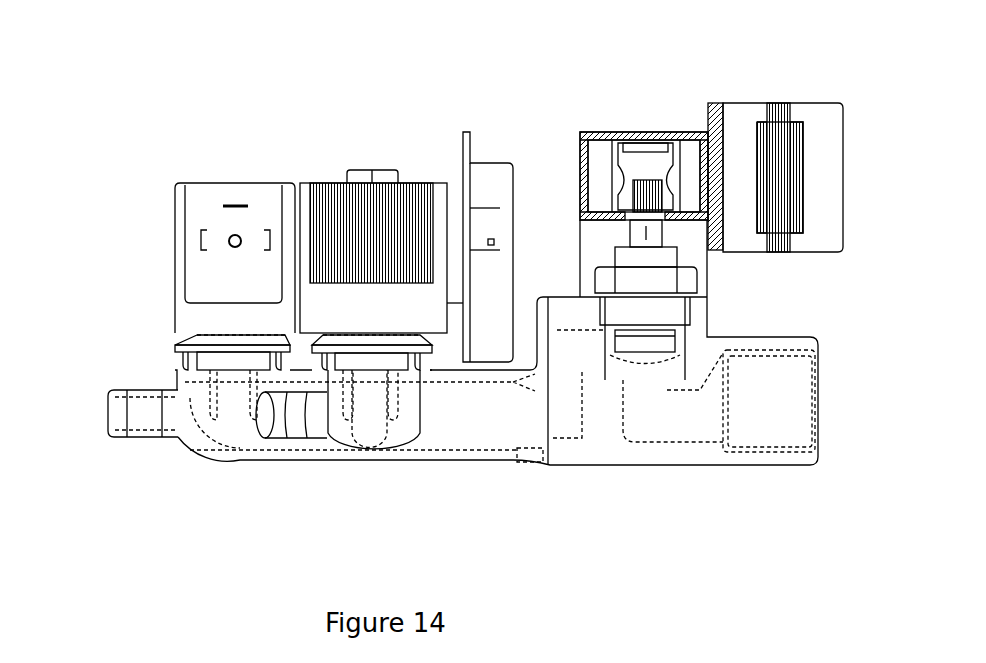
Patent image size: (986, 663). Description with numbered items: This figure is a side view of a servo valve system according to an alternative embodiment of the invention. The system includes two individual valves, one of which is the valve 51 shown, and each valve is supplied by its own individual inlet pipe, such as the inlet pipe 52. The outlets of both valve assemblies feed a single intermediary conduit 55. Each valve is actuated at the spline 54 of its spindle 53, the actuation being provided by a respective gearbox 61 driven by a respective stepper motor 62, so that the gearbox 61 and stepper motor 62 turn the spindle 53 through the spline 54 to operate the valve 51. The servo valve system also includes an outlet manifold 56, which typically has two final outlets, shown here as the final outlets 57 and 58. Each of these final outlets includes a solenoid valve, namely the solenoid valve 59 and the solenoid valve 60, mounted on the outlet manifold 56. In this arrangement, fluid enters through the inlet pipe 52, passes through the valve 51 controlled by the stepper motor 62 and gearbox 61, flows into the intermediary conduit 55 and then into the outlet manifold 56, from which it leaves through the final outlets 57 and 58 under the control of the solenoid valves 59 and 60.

The valve 51 is at (663, 313).
The inlet pipe 52 is at (790, 407).
The spindle 53 is at (663, 343).
The spline 54 is at (662, 192).
The intermediary conduit 55 is at (510, 428).
The outlet manifold 56 is at (430, 472).
The final outlet 57 is at (297, 418).
The final outlet 58 is at (153, 420).
The solenoid valve 59 is at (325, 192).
The solenoid valve 60 is at (200, 200).
The gearbox 61 is at (647, 152).
The stepper motor 62 is at (823, 175).